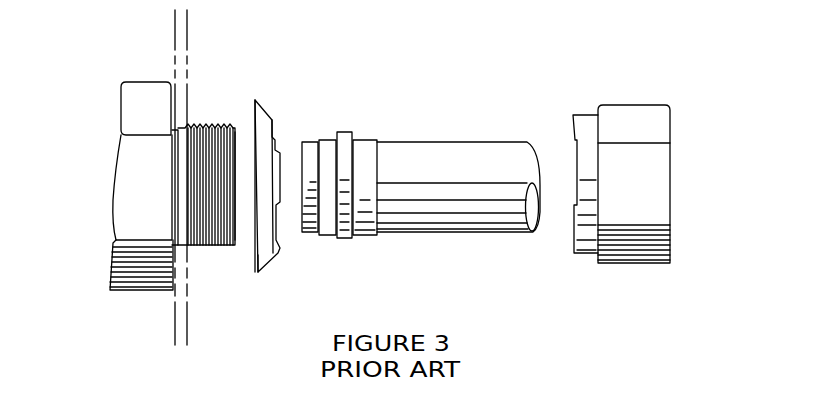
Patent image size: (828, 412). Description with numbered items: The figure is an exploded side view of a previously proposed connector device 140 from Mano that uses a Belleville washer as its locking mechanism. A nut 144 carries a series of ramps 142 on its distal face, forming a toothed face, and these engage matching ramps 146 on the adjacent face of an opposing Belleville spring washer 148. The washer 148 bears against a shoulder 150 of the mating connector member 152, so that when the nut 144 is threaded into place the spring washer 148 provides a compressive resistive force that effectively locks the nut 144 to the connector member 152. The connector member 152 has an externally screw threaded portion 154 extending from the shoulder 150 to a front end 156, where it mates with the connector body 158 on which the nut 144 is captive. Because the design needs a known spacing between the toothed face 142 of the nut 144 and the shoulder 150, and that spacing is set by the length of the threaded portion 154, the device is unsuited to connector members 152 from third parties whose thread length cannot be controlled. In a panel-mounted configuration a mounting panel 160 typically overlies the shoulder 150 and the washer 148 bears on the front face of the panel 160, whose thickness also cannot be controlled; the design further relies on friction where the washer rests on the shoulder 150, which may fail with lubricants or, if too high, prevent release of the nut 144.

The connector device 140 is at (348, 90).
The ramps 142 is at (575, 232).
The nut 144 is at (630, 240).
The matching ramps 146 is at (280, 240).
The Belleville spring washer 148 is at (258, 255).
The shoulder 150 is at (110, 186).
The connector member 152 is at (137, 170).
The externally screw threaded portion 154 is at (204, 127).
The front end 156 is at (236, 137).
The connector body 158 is at (403, 150).
The mounting panel 160 is at (180, 328).